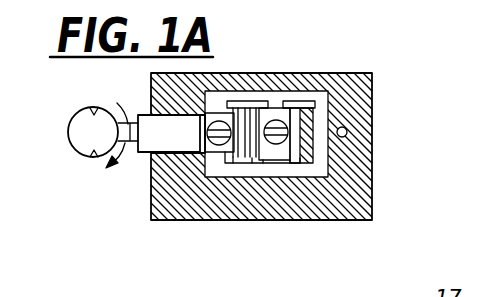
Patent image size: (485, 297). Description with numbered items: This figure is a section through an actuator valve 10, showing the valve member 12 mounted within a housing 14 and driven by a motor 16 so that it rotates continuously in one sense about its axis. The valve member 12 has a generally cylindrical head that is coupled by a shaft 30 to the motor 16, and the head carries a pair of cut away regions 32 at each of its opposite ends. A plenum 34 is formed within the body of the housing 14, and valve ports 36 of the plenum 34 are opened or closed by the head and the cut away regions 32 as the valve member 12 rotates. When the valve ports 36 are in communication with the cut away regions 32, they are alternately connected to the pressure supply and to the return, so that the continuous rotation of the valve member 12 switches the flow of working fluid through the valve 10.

The valve 10 is at (355, 60).
The valve member 12 is at (250, 118).
The housing 14 is at (193, 208).
The motor 16 is at (83, 128).
The shaft 30 is at (148, 124).
The cut away regions 32 is at (294, 102).
The plenum 34 is at (318, 100).
The valve ports 36 is at (278, 112).